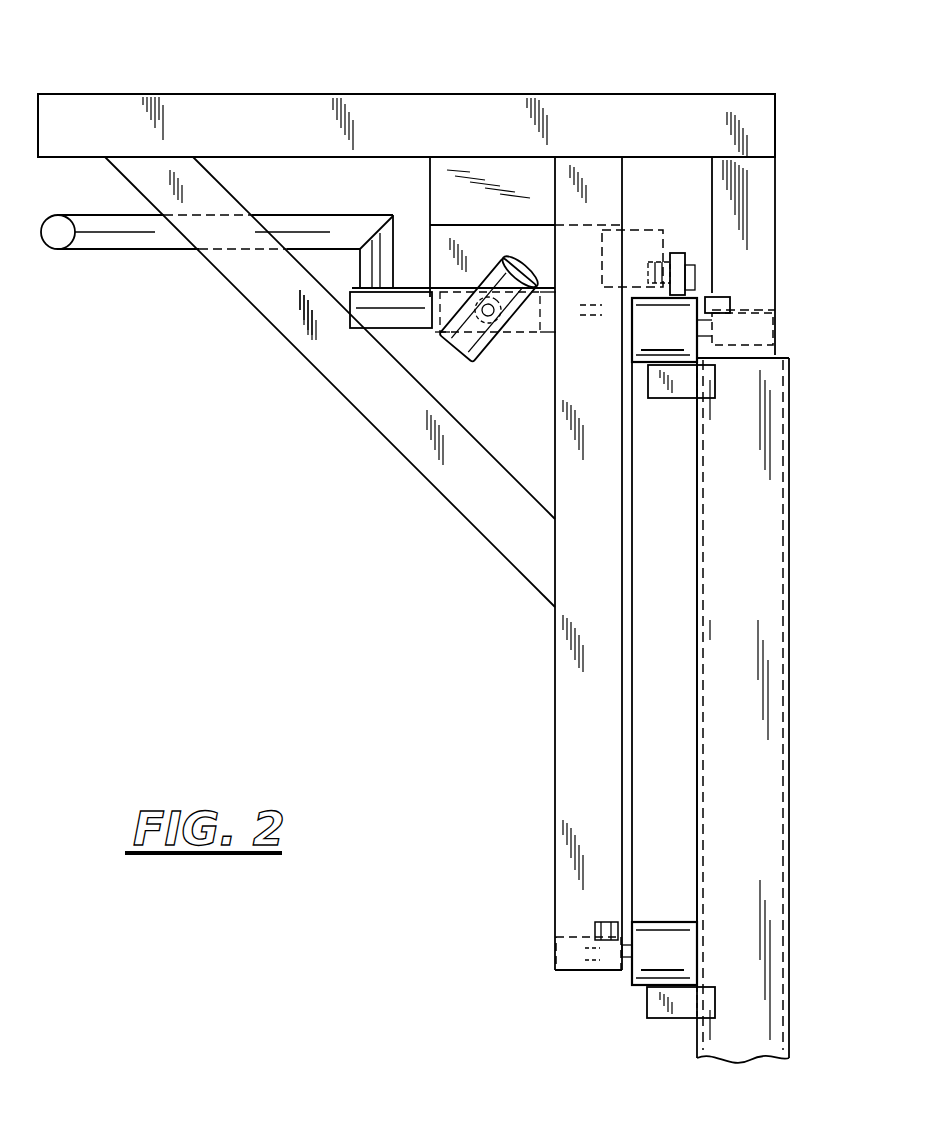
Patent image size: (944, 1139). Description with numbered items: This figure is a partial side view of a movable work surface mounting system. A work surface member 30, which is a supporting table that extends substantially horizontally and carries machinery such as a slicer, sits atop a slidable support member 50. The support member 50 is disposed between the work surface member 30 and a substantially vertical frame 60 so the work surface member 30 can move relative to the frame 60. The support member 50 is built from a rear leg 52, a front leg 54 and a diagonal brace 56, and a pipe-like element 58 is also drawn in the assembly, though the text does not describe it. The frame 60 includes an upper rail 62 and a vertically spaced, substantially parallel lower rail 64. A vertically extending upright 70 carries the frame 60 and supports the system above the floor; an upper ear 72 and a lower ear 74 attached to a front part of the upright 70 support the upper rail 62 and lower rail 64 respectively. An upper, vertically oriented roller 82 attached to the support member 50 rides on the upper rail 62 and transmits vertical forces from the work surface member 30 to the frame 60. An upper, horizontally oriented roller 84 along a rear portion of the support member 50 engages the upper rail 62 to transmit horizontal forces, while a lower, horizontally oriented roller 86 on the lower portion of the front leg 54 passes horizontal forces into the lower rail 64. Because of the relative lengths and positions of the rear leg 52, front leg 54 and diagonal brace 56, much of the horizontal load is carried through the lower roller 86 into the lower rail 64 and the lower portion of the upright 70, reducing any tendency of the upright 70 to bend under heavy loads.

The work surface member 30 is at (247, 97).
The support member 50 is at (322, 394).
The rear leg 52 is at (768, 208).
The front leg 54 is at (562, 737).
The diagonal brace 56 is at (468, 508).
The pipe with elbow 58 is at (236, 271).
The frame 60 is at (549, 296).
The upper rail 62 is at (664, 641).
The lower rail 64 is at (664, 953).
The upright 70 is at (775, 630).
The upper ear 72 is at (718, 398).
The lower ear 74 is at (658, 1020).
The upper vertically oriented roller 82 is at (673, 252).
The upper horizontally oriented roller 84 is at (775, 330).
The lower horizontally oriented roller 86 is at (578, 970).